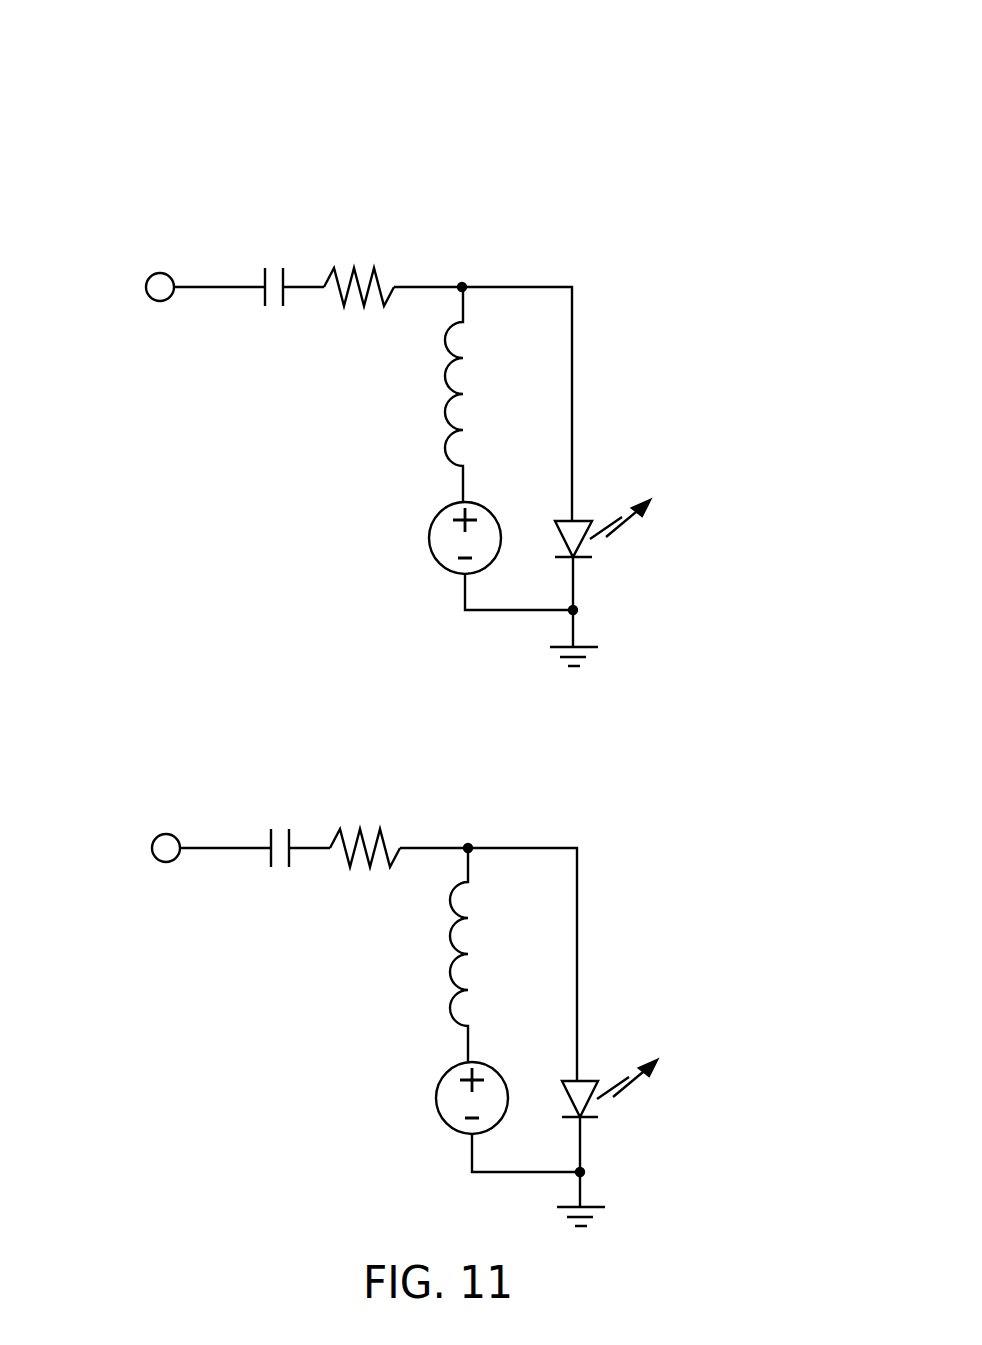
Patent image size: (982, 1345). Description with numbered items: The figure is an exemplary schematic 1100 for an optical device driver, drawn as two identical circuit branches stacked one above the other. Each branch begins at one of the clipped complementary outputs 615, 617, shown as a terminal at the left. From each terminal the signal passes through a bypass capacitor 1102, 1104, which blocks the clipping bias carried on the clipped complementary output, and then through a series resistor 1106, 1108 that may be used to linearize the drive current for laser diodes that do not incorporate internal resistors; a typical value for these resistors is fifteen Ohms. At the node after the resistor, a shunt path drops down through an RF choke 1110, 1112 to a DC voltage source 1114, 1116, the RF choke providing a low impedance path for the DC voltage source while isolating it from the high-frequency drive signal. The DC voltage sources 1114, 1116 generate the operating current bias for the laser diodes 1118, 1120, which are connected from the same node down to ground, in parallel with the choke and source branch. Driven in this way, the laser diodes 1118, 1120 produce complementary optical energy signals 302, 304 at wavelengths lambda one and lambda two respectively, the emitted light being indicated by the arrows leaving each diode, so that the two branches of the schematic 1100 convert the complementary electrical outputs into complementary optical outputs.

The schematic 1100 is at (488, 130).
The clipped complementary output 615 is at (148, 279).
The clipped complementary output 617 is at (154, 840).
The bypass capacitor 1102 is at (262, 296).
The bypass capacitor 1104 is at (268, 857).
The resistor 1106 is at (356, 264).
The resistor 1108 is at (362, 826).
The RF choke 1110 is at (445, 382).
The RF choke 1112 is at (450, 944).
The DC voltage source 1114 is at (430, 538).
The DC voltage source 1116 is at (437, 1098).
The laser diode 1118 is at (590, 521).
The laser diode 1120 is at (596, 1081).
The complementary optical energy signal 302 is at (633, 524).
The complementary optical energy signal 304 is at (640, 1084).